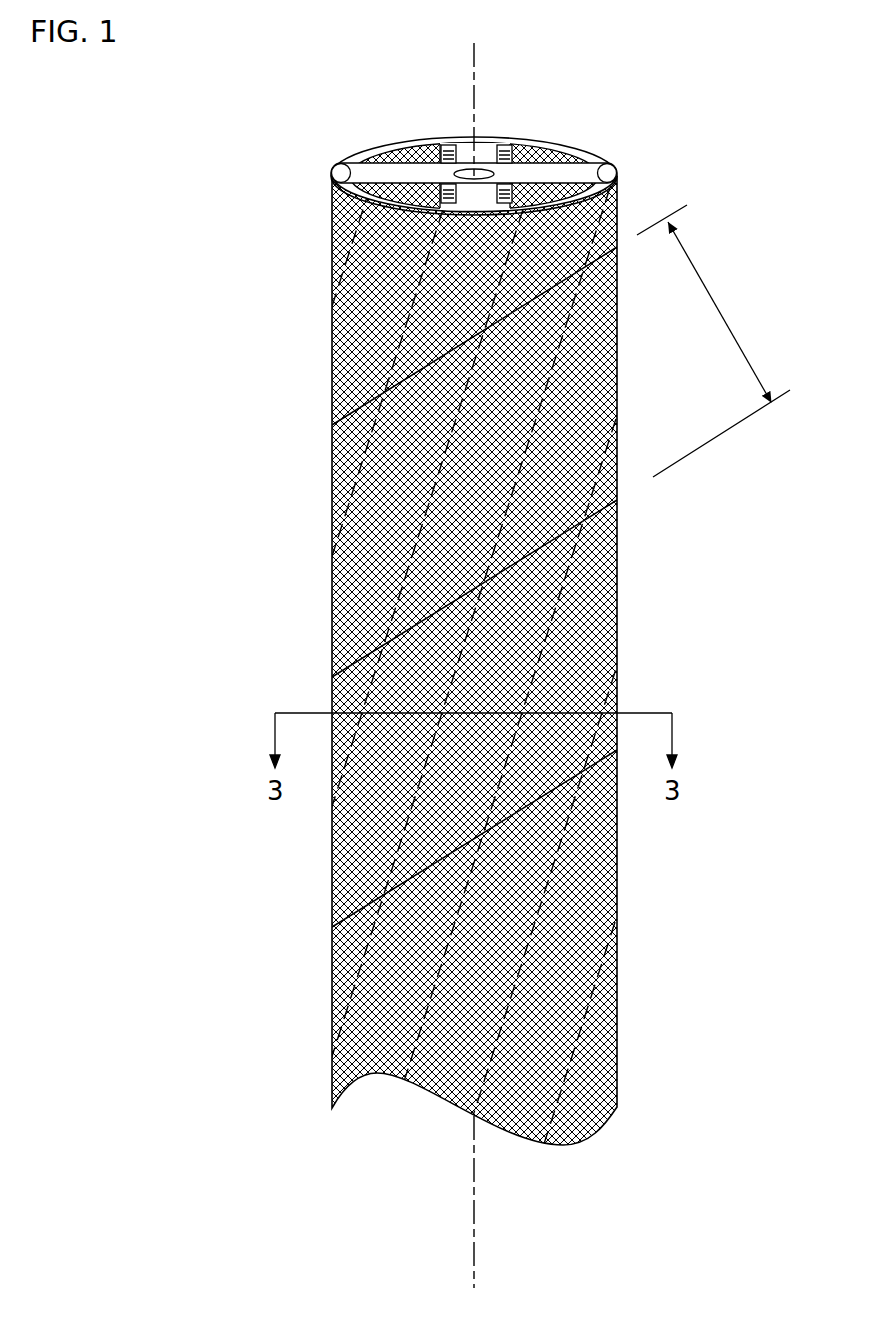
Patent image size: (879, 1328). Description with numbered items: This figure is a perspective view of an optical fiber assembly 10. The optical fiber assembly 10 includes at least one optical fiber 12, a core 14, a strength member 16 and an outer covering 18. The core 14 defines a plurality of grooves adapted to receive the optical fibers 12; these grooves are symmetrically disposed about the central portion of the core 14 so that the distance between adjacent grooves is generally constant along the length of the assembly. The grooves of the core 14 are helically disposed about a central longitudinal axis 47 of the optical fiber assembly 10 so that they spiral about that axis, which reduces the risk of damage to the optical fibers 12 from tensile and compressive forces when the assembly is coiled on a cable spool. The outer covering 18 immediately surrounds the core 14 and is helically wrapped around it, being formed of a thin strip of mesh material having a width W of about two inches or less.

The optical fiber assembly 10 is at (266, 183).
The optical fiber 12 is at (447, 158).
The core 14 is at (615, 160).
The strength member 16 is at (500, 168).
The outer covering 18 is at (620, 583).
The central longitudinal axis 47 is at (478, 63).
The width W is at (718, 308).